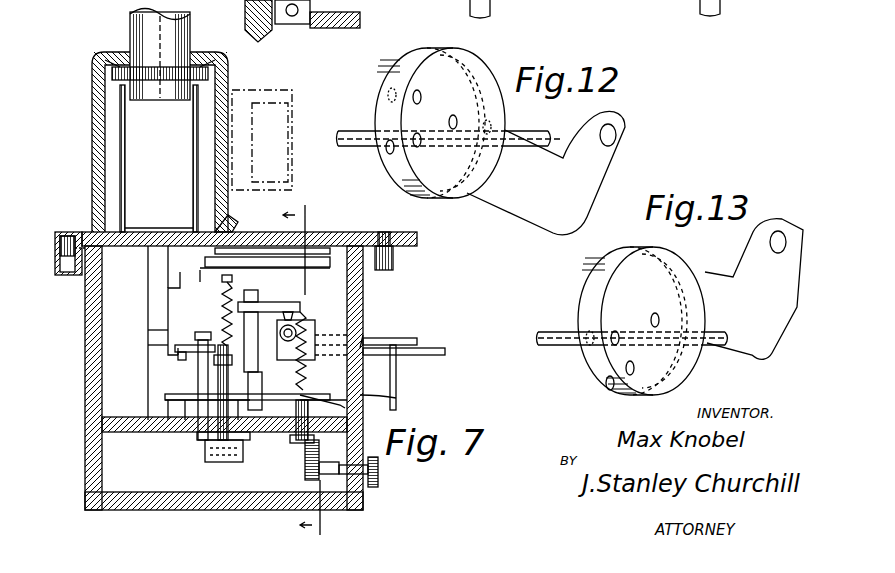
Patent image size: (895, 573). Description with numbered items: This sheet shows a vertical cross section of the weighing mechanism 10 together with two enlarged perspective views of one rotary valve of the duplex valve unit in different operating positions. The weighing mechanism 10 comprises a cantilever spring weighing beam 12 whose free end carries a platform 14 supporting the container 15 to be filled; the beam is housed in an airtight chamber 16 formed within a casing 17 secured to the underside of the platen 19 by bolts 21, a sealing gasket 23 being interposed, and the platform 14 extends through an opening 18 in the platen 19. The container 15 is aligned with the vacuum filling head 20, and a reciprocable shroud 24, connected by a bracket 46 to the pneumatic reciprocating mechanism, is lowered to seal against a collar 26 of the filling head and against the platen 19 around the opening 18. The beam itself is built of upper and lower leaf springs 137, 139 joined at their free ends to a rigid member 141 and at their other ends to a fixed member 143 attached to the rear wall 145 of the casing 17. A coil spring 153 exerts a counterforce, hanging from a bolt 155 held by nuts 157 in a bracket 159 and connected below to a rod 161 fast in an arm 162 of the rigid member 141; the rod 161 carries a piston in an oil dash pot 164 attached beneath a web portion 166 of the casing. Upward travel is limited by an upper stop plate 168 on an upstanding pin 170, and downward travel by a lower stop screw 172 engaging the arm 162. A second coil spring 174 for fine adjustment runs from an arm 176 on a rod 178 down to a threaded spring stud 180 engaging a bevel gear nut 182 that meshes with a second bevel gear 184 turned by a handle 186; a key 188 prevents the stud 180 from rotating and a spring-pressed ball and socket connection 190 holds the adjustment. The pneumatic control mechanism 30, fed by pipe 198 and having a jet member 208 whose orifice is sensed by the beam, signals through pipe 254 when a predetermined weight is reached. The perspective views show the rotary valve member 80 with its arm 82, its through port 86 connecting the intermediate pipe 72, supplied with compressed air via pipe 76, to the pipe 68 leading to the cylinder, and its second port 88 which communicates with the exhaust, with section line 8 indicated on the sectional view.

In FIG. 7, the weighing mechanism 10 is at (117, 360).
In FIG. 7, the cantilever spring weighing beam 12 is at (152, 302).
In FIG. 7, the platform 14 is at (165, 215).
In FIG. 7, the container 15 is at (120, 144).
In FIG. 7, the airtight chamber 16 is at (139, 325).
In FIG. 7, the casing 17 is at (85, 348).
In FIG. 7, the opening 18 is at (135, 252).
In FIG. 7, the platen 19 is at (68, 232).
In FIG. 7, the vacuum filling head 20 is at (130, 24).
In FIG. 7, the sealing ring 21 is at (108, 55).
In FIG. 7, the sealing ring 23 is at (232, 224).
In FIG. 7, the reciprocable shroud 24 is at (92, 86).
In FIG. 7, the collar 26 is at (208, 72).
In FIG. 7, the pneumatic control mechanism 30 is at (326, 338).
In FIG. 7, the bracket 46 is at (275, 90).
In FIG. 12, the pipe 68 is at (362, 130).
In FIG. 13, the pipe 68 is at (563, 330).
In FIG. 12, the intermediate pipe 72 is at (540, 132).
In FIG. 13, the intermediate pipe 72 is at (718, 330).
In FIG. 7, the pipe 76 is at (396, 383).
In FIG. 12, the rotary valve member 80 is at (470, 60).
In FIG. 13, the rotary valve member 80 is at (605, 270).
In FIG. 12, the arm 82 is at (510, 215).
In FIG. 13, the arm 82 is at (730, 277).
In FIG. 12, the through port 86 is at (422, 96).
In FIG. 13, the through port 86 is at (618, 330).
In FIG. 12, the second port 88 is at (420, 146).
In FIG. 13, the second port 88 is at (632, 362).
In FIG. 7, the upper cantilever leaf springs 137 is at (186, 287).
In FIG. 7, the lower cantilever leaf springs 139 is at (290, 398).
In FIG. 7, the rigid member 141 is at (150, 342).
In FIG. 7, the second rigid member 143 is at (360, 332).
In FIG. 7, the rear wall 145 is at (396, 398).
In FIG. 7, the coil spring 153 is at (222, 310).
In FIG. 7, the bolt 155 is at (215, 251).
In FIG. 7, the nuts 157 is at (215, 258).
In FIG. 7, the bracket 159 is at (240, 260).
In FIG. 7, the rod 161 is at (200, 445).
In FIG. 7, the arm 162 is at (247, 393).
In FIG. 7, the dash pot 164 is at (222, 462).
In FIG. 7, the web portion 166 is at (168, 432).
In FIG. 7, the upper stop plate 168 is at (184, 343).
In FIG. 7, the upstanding pin 170 is at (200, 372).
In FIG. 7, the lower stop screw 172 is at (195, 395).
In FIG. 7, the second coil spring 174 is at (290, 382).
In FIG. 7, the arm 176 is at (250, 296).
In FIG. 7, the rod 178 is at (258, 312).
In FIG. 7, the threaded spring stud 180 is at (310, 413).
In FIG. 7, the bevel gear nut 182 is at (312, 468).
In FIG. 7, the second bevel gear 184 is at (246, 32).
In FIG. 7, the handle 186 is at (378, 472).
In FIG. 7, the key 188 is at (296, 438).
In FIG. 7, the spring-pressed ball and socket connection 190 is at (350, 462).
In FIG. 7, the pipe 198 is at (417, 340).
In FIG. 7, the jet member 208 is at (300, 322).
In FIG. 7, the pipe 254 is at (445, 355).
In FIG. 7, the section line 8 is at (314, 370).